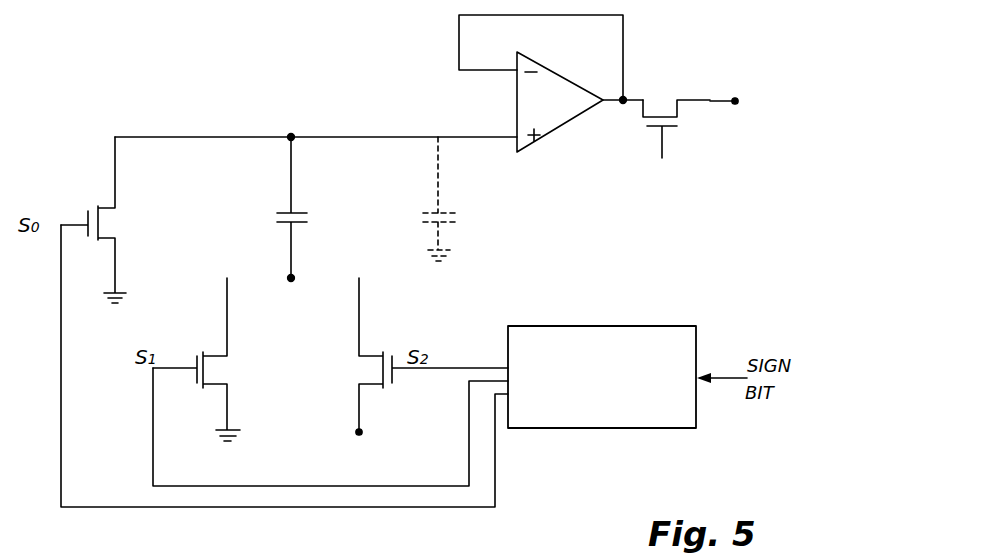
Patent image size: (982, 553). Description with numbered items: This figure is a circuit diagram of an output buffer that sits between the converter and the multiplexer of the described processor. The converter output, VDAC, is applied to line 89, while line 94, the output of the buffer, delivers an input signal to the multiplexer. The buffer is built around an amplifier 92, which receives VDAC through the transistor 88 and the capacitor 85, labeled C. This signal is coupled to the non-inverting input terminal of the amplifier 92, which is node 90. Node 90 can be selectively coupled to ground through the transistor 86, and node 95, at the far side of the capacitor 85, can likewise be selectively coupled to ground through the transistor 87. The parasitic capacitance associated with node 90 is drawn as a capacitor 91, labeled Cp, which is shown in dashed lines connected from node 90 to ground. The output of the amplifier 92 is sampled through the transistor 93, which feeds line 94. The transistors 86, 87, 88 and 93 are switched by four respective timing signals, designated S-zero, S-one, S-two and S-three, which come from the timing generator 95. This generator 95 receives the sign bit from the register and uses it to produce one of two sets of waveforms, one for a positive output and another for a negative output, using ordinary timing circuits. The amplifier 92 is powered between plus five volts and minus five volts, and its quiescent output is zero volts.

The capacitor 85 is at (306, 221).
The transistor 86 is at (100, 223).
The transistor 87 is at (205, 368).
The transistor 88 is at (374, 367).
The line 89 is at (362, 429).
The node 90 is at (291, 131).
The capacitor 91 is at (440, 195).
The amplifier 92 is at (548, 133).
The transistor 93 is at (660, 115).
The line 94 is at (711, 104).
The timing generator 95 is at (597, 429).